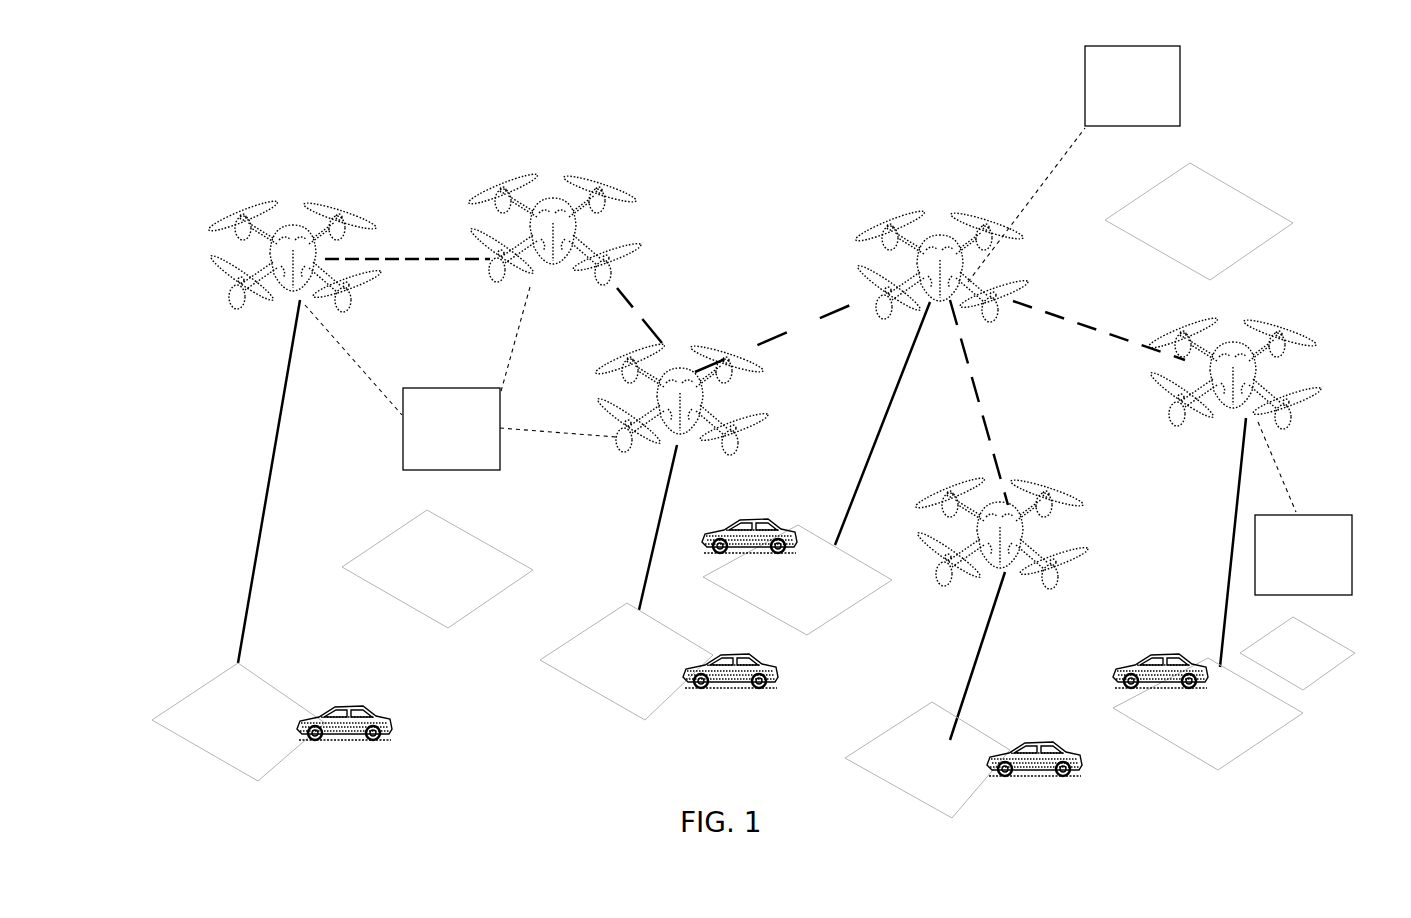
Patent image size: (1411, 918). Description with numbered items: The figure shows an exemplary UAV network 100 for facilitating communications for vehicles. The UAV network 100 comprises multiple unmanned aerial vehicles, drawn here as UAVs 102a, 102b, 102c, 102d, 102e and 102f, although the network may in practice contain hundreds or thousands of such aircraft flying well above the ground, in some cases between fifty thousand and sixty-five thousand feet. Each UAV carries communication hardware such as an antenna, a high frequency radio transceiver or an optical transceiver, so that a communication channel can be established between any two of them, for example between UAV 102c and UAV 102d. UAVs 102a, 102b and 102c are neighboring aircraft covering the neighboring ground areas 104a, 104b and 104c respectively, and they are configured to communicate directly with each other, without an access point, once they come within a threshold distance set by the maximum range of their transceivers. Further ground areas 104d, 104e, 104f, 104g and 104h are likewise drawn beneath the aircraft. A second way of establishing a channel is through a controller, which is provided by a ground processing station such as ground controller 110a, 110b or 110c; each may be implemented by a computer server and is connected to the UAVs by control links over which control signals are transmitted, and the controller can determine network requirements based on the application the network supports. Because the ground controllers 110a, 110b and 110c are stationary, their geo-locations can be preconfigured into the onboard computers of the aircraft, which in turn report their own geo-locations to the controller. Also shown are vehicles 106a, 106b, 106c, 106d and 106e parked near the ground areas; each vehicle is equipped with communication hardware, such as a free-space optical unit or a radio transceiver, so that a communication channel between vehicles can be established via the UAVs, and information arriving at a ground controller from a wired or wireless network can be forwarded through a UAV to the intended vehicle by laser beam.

The UAV network 100 is at (1113, 770).
The UAV 102a is at (289, 223).
The UAV 102b is at (637, 244).
The UAV 102c is at (768, 408).
The UAV 102d is at (997, 225).
The UAV 102e is at (1063, 487).
The UAV 102f is at (1302, 333).
The area 104a is at (238, 722).
The area 104b is at (437, 569).
The area 104c is at (626, 661).
The area 104d is at (797, 580).
The area 104e is at (927, 760).
The area 104f is at (1208, 714).
The area 104g is at (1297, 653).
The area 104h is at (1199, 221).
The vehicle 106a is at (375, 708).
The vehicle 106b is at (780, 686).
The vehicle 106c is at (762, 518).
The vehicle 106d is at (1023, 751).
The vehicle 106e is at (1143, 657).
The ground controller 110a is at (451, 388).
The ground controller 110b is at (1302, 515).
The ground controller 110c is at (1180, 85).